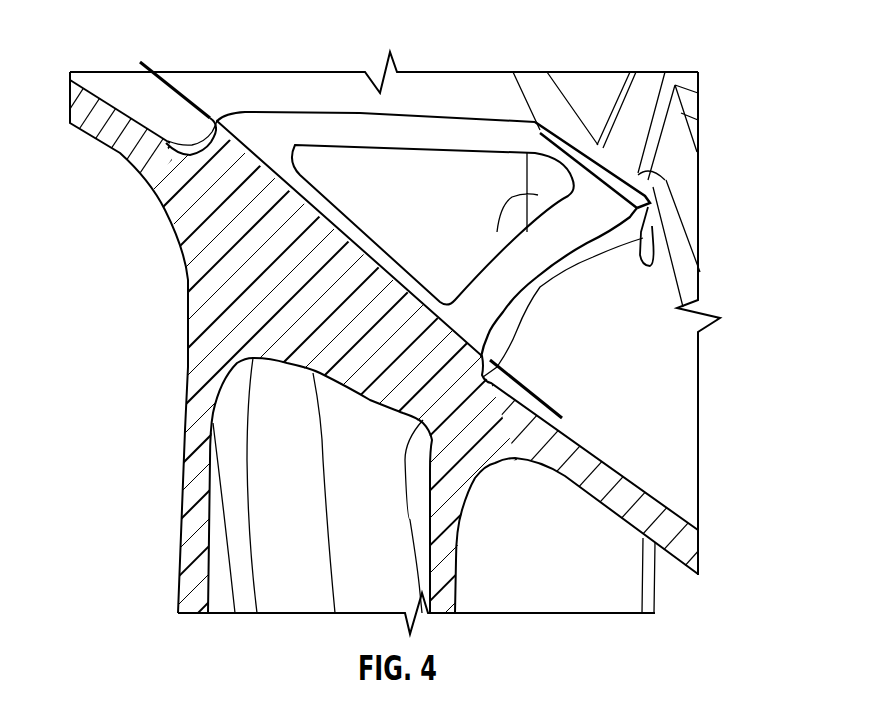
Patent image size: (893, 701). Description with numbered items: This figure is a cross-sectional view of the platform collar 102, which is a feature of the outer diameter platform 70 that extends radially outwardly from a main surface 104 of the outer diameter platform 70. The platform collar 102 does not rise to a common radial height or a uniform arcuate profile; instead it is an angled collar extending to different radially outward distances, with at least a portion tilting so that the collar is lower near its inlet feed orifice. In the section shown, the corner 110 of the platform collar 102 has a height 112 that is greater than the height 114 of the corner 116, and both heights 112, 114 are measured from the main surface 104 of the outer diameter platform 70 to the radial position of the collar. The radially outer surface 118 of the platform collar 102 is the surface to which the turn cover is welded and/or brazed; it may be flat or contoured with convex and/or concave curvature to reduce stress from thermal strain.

The outer diameter platform 70 is at (229, 65).
The platform collar 102 is at (343, 103).
The main surface 104 is at (657, 368).
The corner 110 is at (160, 197).
The height 112 is at (165, 82).
The height 114 is at (543, 396).
The corner 116 is at (507, 310).
The radially outer surface 118 is at (541, 125).